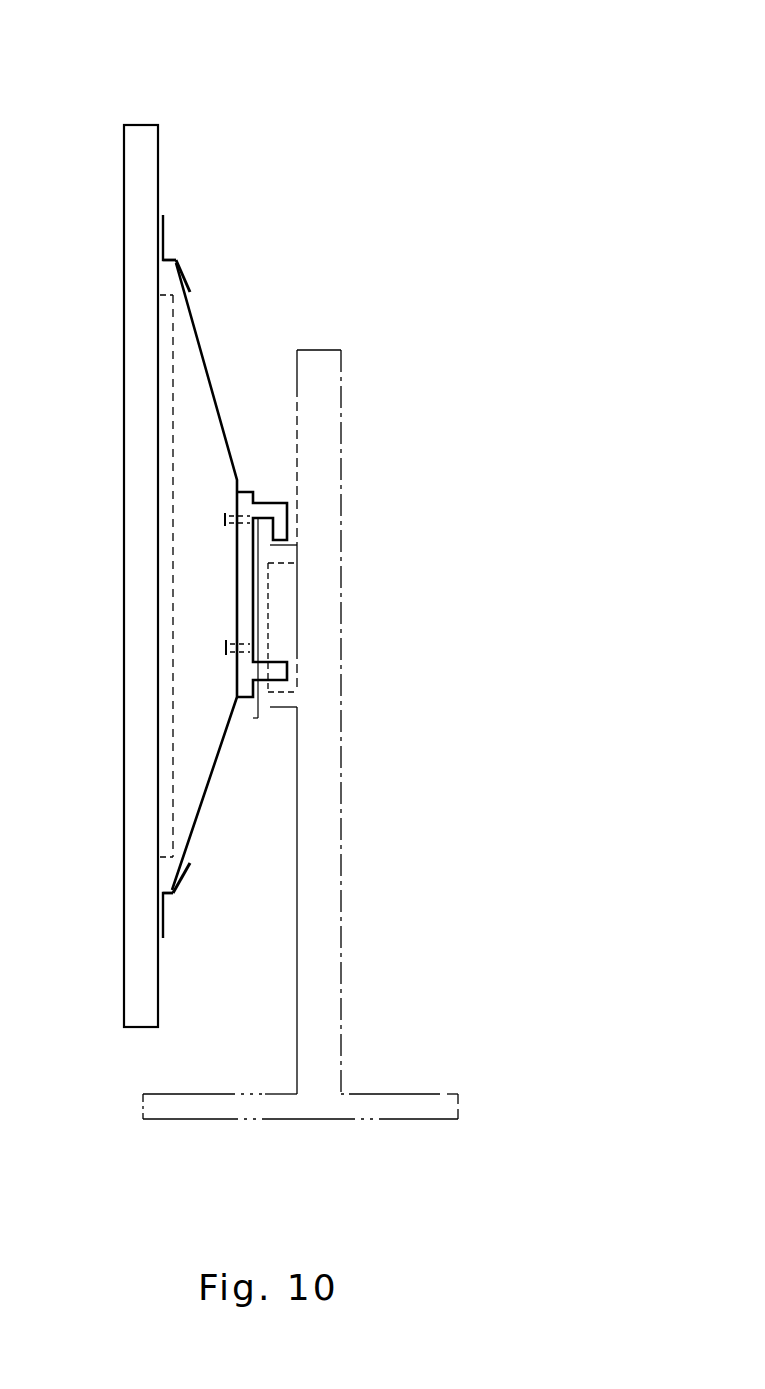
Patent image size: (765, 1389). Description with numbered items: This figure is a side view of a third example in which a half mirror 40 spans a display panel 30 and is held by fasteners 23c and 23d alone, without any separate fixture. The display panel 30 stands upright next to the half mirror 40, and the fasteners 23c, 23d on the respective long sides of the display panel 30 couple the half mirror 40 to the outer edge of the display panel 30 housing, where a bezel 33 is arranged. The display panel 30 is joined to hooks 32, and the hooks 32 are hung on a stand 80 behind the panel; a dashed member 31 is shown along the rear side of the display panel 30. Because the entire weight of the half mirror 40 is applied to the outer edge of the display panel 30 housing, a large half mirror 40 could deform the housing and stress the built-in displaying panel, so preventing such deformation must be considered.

The half mirror 40 is at (124, 125).
The fastener 23c is at (178, 257).
The fastener 23d is at (178, 894).
The display panel 30 is at (200, 350).
The panel-side member 31 is at (173, 350).
The hook 32 is at (262, 500).
The bezel 33 is at (165, 272).
The stand 80 is at (345, 338).